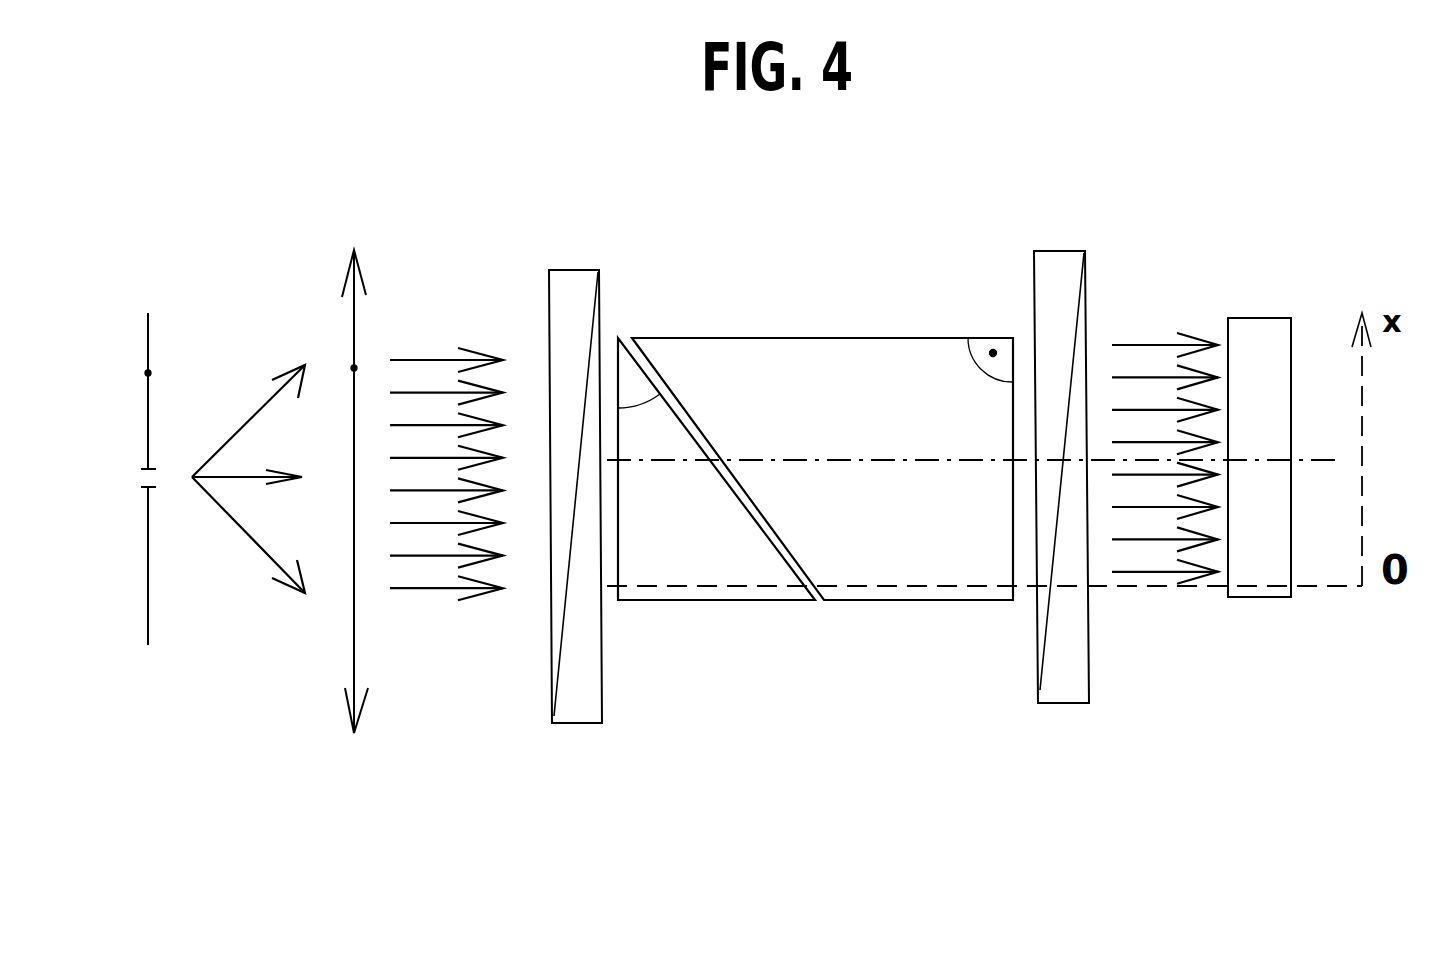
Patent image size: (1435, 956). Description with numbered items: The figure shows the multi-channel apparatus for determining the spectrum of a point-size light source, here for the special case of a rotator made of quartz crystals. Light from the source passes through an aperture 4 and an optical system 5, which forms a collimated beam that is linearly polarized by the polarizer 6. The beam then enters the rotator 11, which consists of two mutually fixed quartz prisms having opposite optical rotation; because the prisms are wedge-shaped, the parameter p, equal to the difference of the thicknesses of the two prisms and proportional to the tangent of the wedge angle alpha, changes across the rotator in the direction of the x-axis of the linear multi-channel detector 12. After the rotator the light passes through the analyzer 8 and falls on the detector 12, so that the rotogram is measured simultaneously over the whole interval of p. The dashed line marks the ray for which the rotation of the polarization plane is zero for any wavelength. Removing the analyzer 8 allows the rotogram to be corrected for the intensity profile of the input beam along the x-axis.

The aperture 4 is at (148, 373).
The optical system 5 is at (354, 368).
The polarizer 6 is at (573, 302).
The rotator 11 is at (835, 383).
The analyzing polarizer 8 is at (1047, 287).
The multi-channel detector 12 is at (1253, 350).